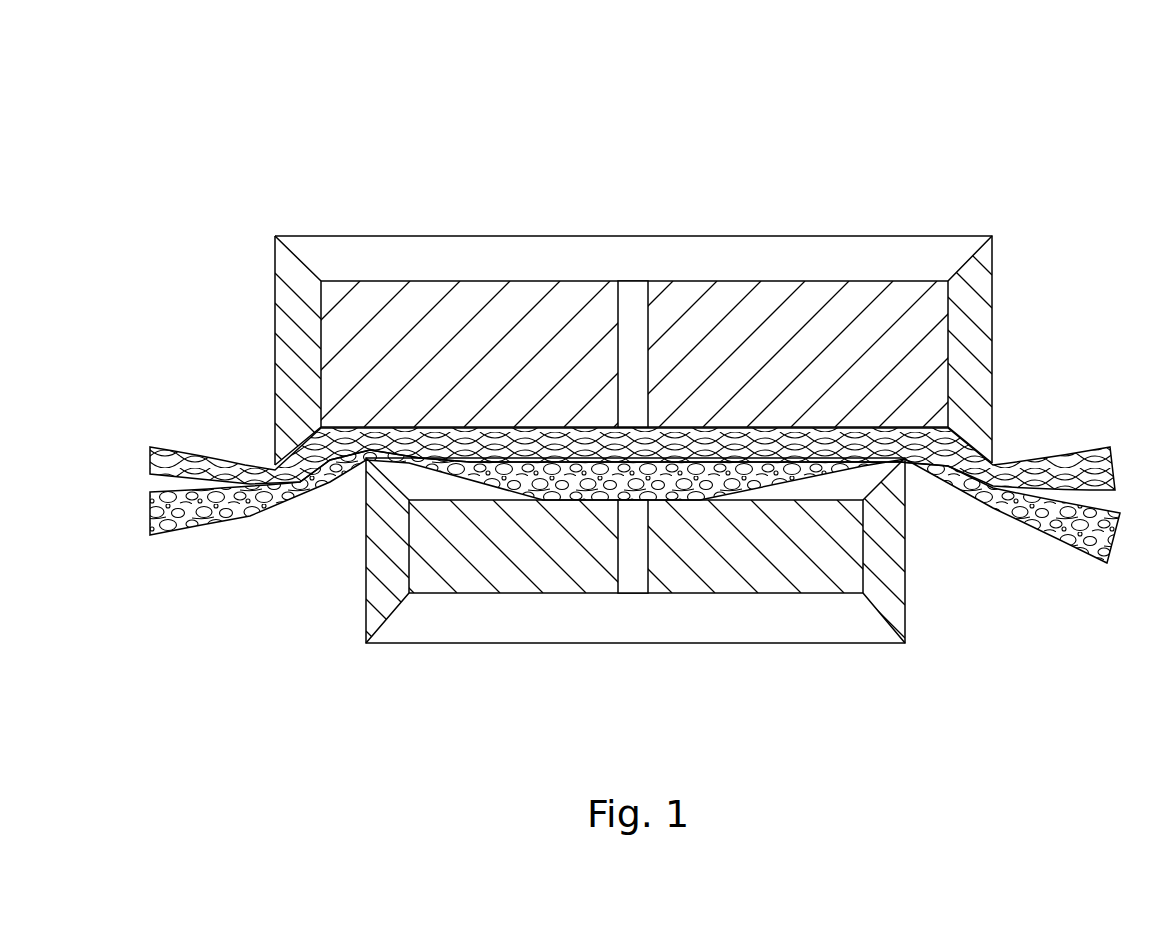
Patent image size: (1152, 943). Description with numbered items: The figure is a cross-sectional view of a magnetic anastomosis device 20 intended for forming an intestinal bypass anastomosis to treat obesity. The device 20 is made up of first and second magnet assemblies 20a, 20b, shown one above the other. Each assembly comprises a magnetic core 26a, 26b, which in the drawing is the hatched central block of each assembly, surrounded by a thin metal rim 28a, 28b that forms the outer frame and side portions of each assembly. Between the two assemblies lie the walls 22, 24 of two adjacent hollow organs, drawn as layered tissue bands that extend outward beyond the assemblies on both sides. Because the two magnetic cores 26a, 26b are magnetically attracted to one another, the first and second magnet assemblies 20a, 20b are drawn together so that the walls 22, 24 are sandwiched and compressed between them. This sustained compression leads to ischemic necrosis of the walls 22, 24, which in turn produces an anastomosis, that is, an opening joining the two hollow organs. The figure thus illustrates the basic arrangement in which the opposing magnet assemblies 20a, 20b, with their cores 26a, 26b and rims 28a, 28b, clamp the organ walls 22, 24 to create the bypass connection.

The magnetic anastomosis device 20 is at (430, 75).
The first magnet assembly 20a is at (338, 187).
The second magnet assembly 20b is at (391, 725).
The magnetic core 26a is at (806, 312).
The magnetic core 26b is at (537, 563).
The thin metal rim 28a is at (282, 348).
The thin metal rim 28b is at (381, 542).
The wall of hollow organ 24 is at (1062, 463).
The wall of hollow organ 22 is at (1048, 537).